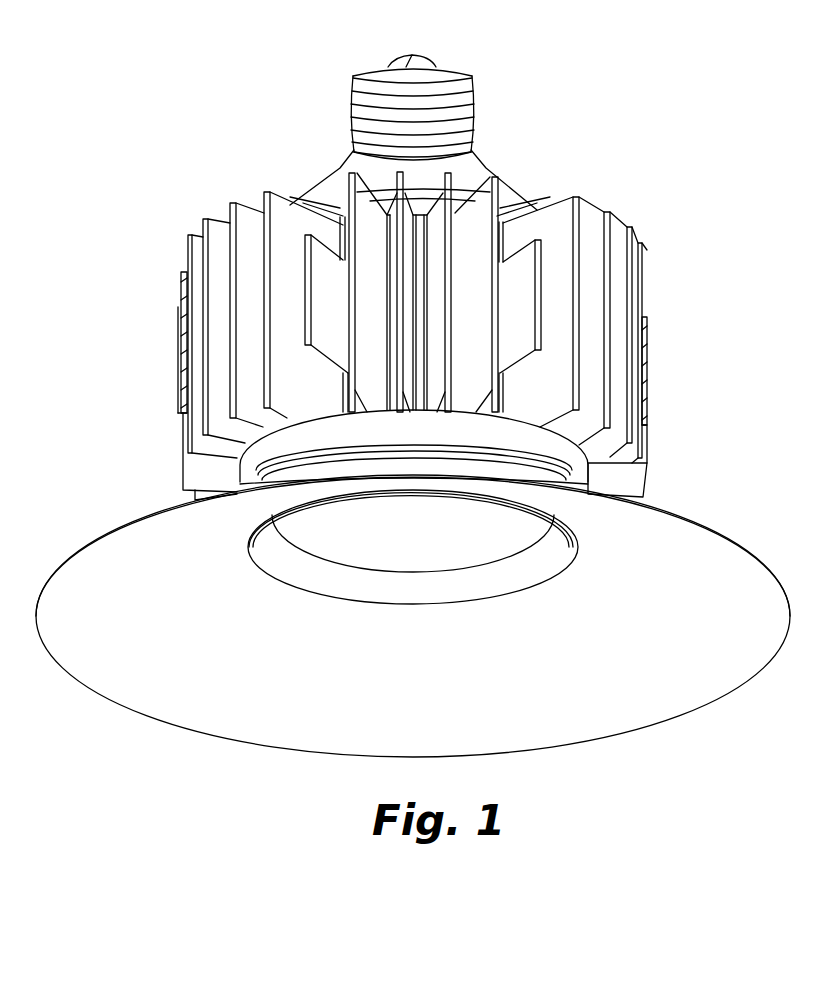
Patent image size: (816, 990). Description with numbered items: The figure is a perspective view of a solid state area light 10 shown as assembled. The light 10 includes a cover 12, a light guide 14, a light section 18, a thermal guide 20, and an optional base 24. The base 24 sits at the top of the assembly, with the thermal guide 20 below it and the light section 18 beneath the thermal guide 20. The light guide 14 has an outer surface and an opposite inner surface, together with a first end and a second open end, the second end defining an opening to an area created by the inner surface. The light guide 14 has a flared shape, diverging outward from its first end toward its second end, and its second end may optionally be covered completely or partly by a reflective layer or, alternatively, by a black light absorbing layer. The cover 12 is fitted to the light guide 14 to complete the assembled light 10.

The solid state area light 10 is at (604, 53).
The cover 12 is at (427, 560).
The light guide 14 is at (597, 715).
The light section 18 is at (578, 476).
The thermal guide 20 is at (637, 278).
The base 24 is at (470, 78).